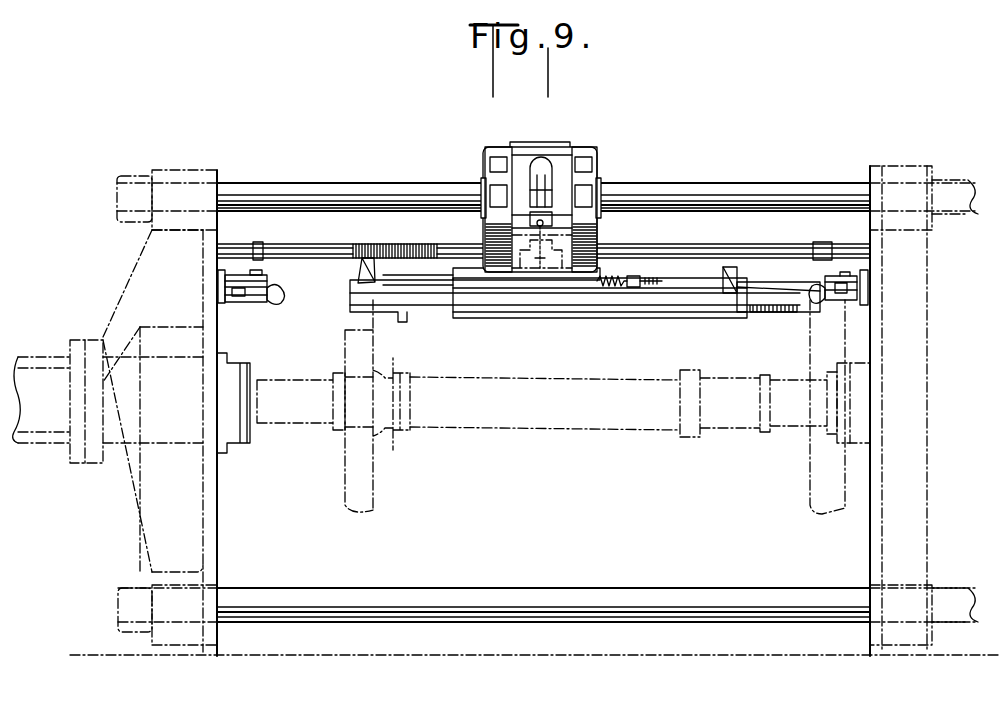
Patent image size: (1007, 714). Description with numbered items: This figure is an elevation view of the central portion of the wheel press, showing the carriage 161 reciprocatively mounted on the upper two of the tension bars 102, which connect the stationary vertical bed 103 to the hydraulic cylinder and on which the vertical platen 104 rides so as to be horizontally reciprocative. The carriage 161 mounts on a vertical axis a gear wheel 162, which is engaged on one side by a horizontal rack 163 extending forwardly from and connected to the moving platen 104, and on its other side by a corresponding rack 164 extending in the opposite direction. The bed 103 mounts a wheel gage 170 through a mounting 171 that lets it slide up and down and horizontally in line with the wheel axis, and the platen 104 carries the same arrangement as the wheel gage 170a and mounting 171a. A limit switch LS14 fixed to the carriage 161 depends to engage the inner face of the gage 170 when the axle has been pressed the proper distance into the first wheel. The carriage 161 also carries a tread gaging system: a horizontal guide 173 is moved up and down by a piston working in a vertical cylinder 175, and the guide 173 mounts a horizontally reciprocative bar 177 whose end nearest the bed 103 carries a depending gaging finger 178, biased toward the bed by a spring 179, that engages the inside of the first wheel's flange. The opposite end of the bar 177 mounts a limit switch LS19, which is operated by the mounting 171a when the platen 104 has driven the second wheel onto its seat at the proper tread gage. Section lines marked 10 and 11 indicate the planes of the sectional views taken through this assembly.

The tension bars 102 is at (832, 192).
The stationary vertical bed 103 is at (128, 497).
The vertical platen 104 is at (916, 405).
The carriage 161 is at (584, 147).
The gear wheel 162 is at (600, 231).
The horizontal rack 163 is at (716, 243).
The rack 164 is at (297, 247).
The wheel gage 170 is at (279, 305).
The wheel gage 170a is at (817, 293).
The mounting 171 is at (263, 277).
The mounting 171a is at (850, 283).
The horizontal guide 173 is at (652, 276).
The vertical cylinder 175 is at (546, 178).
The horizontally reciprocative bar 177 is at (703, 300).
The gaging finger 178 is at (402, 319).
The spring 179 is at (612, 288).
The limit switch LS14 is at (370, 262).
The limit switch LS19 is at (737, 265).
The section line 10 is at (328, 113).
The section line 11 is at (750, 107).